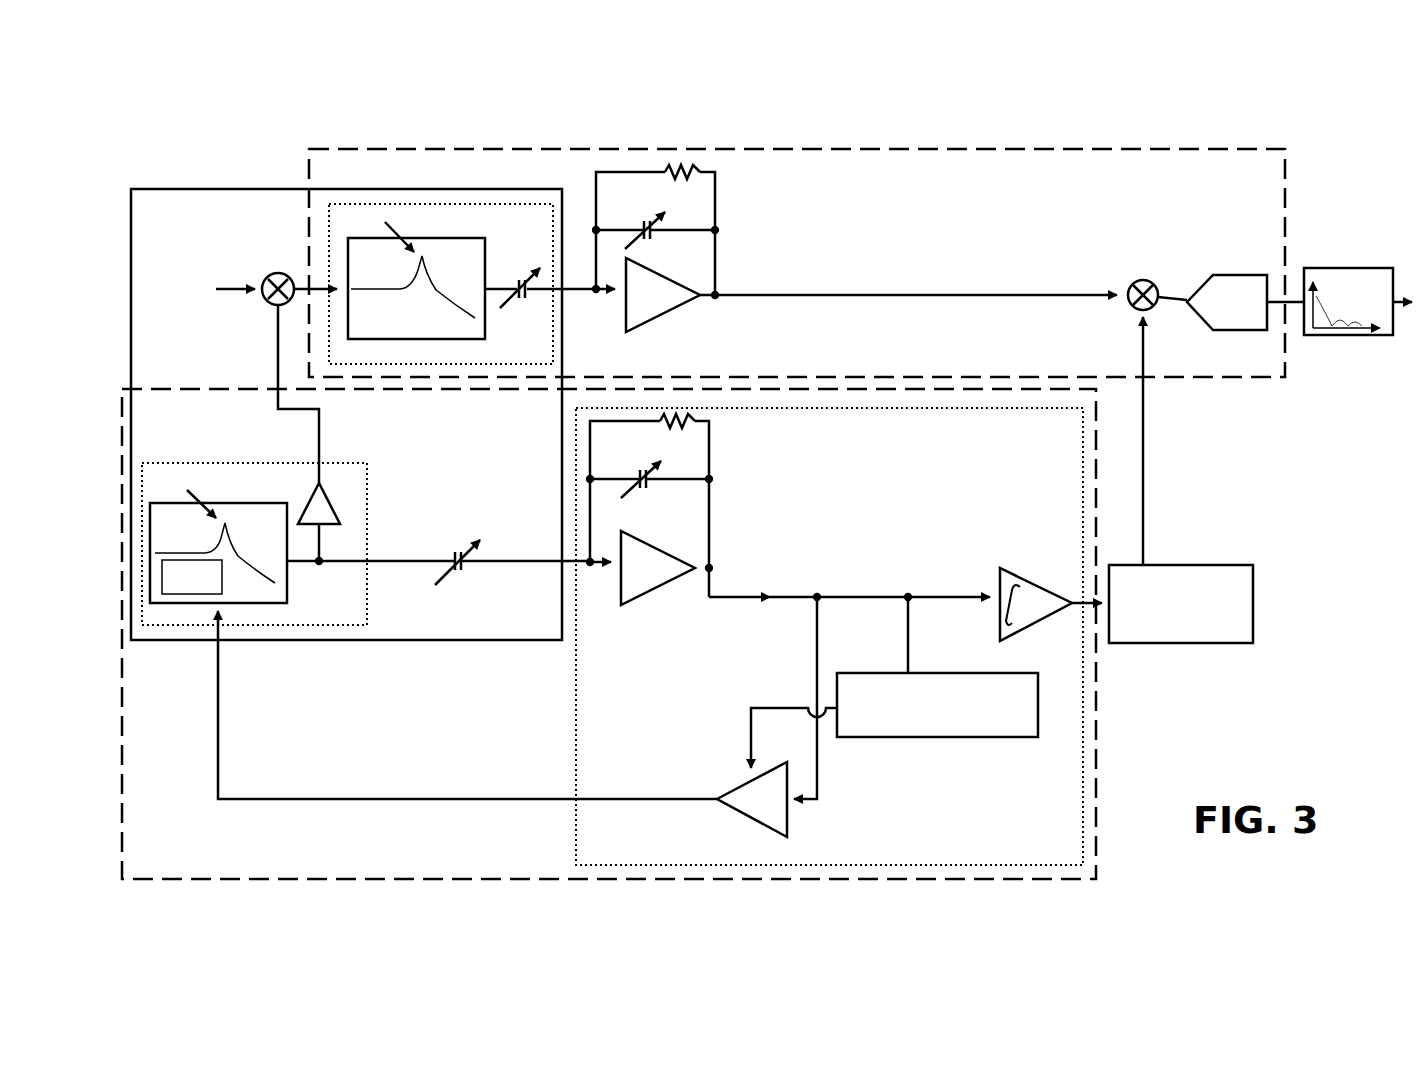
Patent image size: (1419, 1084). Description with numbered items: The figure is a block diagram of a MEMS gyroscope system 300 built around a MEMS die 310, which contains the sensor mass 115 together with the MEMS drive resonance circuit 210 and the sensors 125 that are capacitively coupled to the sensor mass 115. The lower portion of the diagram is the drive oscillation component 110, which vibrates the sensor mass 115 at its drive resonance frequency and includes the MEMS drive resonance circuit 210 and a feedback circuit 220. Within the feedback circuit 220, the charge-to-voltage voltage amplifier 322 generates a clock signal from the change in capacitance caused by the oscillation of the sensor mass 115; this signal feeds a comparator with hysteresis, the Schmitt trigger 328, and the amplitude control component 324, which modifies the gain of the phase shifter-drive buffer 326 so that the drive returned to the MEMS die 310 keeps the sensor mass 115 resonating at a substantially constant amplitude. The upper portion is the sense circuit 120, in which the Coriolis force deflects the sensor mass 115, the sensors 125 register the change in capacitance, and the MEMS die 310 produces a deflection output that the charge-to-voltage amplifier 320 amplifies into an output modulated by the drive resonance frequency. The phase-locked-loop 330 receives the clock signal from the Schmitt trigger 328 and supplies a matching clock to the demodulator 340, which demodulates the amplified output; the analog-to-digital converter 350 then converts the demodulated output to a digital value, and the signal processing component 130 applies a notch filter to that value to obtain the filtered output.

The MEMS gyroscope system 300 is at (211, 120).
The sense circuit 120 is at (1290, 181).
The sensors 125 is at (326, 241).
The charge-to-voltage amplifier 320 is at (678, 313).
The demodulator 340 is at (1138, 275).
The analog-to-digital converter 350 is at (1222, 271).
The signal processing component 130 is at (1337, 339).
The MEMS die 310 is at (401, 643).
The MEMS drive resonance circuit 210 is at (226, 458).
The sensor mass 115 is at (192, 577).
The drive oscillation component 110 is at (1100, 754).
The feedback circuit 220 is at (989, 416).
The charge-to-voltage voltage amplifier 322 is at (655, 597).
The Schmitt trigger 328 is at (1017, 561).
The amplitude control component 324 is at (930, 744).
The phase shifter-drive buffer 326 is at (822, 804).
The phase-locked-loop (PLL) 330 is at (1175, 559).